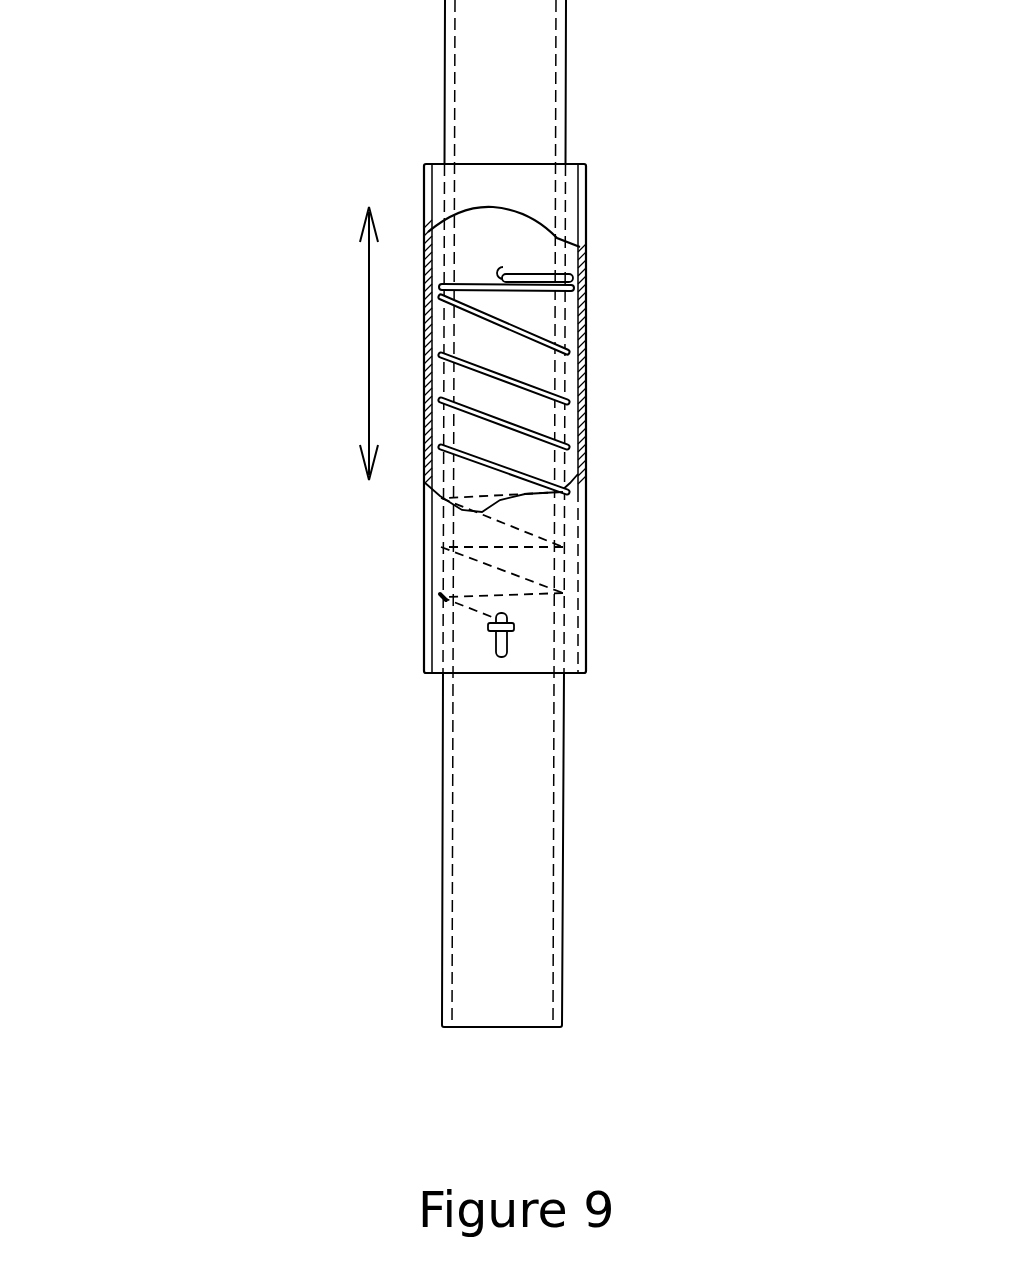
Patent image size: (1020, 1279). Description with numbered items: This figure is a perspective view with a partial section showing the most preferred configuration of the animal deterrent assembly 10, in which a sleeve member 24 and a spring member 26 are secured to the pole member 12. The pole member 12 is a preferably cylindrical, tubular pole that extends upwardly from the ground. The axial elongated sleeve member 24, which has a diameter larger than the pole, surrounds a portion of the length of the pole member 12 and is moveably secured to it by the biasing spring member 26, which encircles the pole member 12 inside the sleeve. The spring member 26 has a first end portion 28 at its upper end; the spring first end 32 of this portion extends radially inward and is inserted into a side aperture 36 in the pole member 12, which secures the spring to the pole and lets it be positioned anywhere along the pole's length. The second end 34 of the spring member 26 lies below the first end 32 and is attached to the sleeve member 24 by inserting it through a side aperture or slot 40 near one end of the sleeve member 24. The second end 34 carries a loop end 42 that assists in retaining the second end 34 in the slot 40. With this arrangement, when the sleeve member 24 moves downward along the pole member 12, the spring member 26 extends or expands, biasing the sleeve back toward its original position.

The animal deterrent assembly 10 is at (206, 168).
The pole member 12 is at (538, 107).
The sleeve member 24 is at (423, 528).
The spring member 26 is at (556, 421).
The first end portion 28 is at (575, 290).
The spring first end 32 is at (515, 277).
The second end 34 is at (440, 598).
The side aperture 36 is at (510, 272).
The slot 40 is at (496, 643).
The loop end 42 is at (513, 627).